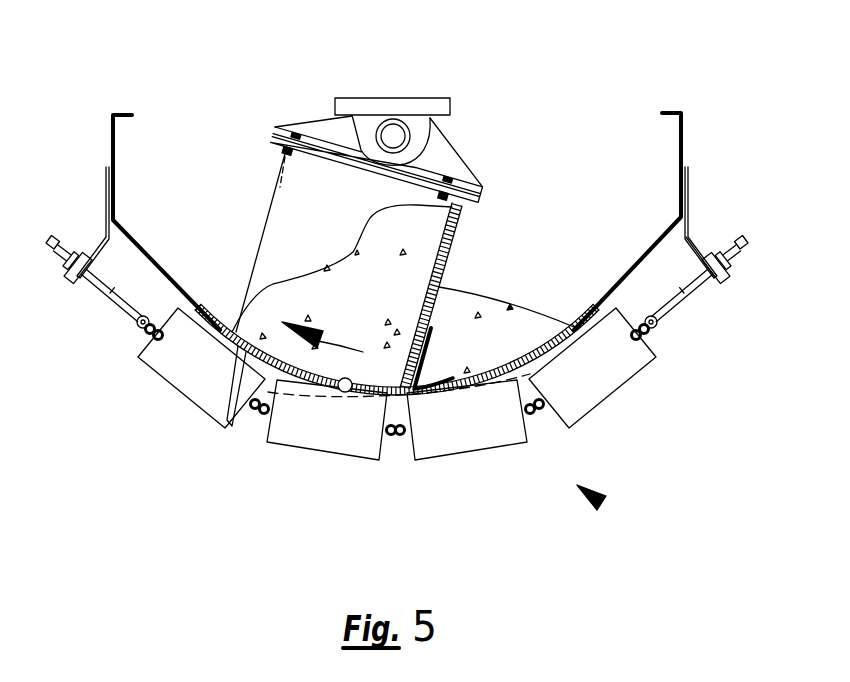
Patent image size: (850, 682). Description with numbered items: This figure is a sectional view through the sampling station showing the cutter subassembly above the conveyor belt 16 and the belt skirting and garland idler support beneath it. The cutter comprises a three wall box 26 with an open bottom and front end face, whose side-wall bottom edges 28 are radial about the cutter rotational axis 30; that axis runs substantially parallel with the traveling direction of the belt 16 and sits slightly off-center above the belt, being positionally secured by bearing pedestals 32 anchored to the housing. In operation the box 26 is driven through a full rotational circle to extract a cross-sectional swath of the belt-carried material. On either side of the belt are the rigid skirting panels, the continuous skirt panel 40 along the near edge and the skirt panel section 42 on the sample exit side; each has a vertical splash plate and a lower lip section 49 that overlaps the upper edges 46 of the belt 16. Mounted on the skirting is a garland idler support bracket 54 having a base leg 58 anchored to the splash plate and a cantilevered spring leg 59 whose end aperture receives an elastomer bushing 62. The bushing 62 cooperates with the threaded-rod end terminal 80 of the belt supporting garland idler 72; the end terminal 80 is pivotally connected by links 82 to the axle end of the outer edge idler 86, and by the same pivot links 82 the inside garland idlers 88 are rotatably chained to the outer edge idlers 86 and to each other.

The belt 16 is at (226, 430).
The three wall box 26 is at (300, 204).
The bottom edges 28 is at (346, 393).
The cutter rotational axis 30 is at (395, 134).
The bearing pedestals 32 is at (366, 107).
The skirt panel 40 is at (651, 245).
The skirt panel section 42 is at (113, 133).
The upper edges 46 is at (210, 335).
The lower lip section 49 is at (212, 328).
The garland idler support bracket 54 is at (107, 197).
The base leg 58 is at (688, 207).
The spring leg 59 is at (97, 250).
The elastomer bushing 62 is at (70, 283).
The garland idler 72 is at (600, 505).
The end terminal 80 is at (125, 313).
The links 82 is at (145, 333).
The outer edge idler 86 is at (160, 369).
The inside garland idlers 88 is at (286, 431).